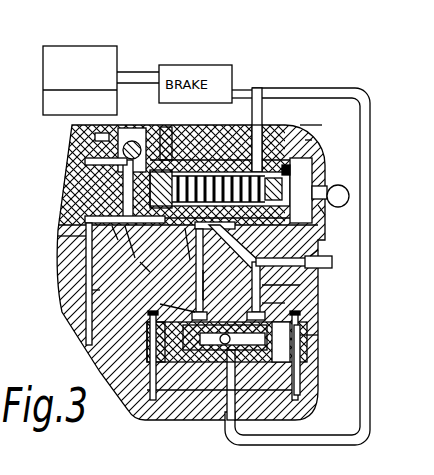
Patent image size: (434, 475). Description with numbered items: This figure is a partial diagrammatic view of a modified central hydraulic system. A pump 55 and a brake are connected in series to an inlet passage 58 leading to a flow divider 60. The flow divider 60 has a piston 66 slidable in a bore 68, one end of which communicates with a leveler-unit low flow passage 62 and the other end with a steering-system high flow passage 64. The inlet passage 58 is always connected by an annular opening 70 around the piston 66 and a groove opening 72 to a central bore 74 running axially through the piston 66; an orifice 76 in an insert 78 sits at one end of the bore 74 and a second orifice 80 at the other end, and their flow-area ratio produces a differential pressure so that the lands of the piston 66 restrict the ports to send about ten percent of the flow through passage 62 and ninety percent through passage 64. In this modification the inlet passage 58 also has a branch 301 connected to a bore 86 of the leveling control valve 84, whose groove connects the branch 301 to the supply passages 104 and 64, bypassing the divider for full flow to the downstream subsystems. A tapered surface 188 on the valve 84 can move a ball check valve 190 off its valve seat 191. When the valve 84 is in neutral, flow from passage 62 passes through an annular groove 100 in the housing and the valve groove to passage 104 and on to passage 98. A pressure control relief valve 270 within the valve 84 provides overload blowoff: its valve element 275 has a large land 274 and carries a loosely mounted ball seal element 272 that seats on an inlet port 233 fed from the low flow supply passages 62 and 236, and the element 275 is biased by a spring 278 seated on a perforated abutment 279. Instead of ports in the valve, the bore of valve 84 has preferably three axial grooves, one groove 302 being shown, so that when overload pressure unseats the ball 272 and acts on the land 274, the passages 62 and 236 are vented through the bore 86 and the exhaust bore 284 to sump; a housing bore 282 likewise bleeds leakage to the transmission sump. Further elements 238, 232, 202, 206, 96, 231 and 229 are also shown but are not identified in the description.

The pump 55 is at (64, 80).
The passage 238 is at (141, 154).
The ball check valve 190 is at (134, 139).
The passage 232 is at (173, 133).
The pressure control relief valve 270 is at (220, 157).
The inlet passage 58 is at (234, 238).
The axial groove 302 is at (258, 100).
The branch 301 is at (264, 112).
The leveling control valve 84 is at (327, 123).
The bore 86 is at (321, 156).
The relief valve element 275 is at (193, 170).
The plug 202 is at (292, 178).
The relief valve spring 278 is at (337, 183).
The passage 206 is at (68, 141).
The valve seat 191 is at (76, 166).
The inlet port 233 is at (121, 199).
The exhaust bore 284 is at (338, 220).
The passage 96 is at (330, 246).
The passage 98 is at (331, 259).
The housing bore 282 is at (46, 247).
The passage 231 is at (52, 284).
The tapered surface 188 is at (130, 240).
The large land 274 is at (211, 214).
The annular groove 100 is at (177, 249).
The transverse passage 236 is at (127, 252).
The ball seal element 272 is at (157, 275).
The passage 229 is at (111, 290).
The low flow passage 62 is at (175, 301).
The perforated abutment 279 is at (233, 246).
The passage 104 is at (287, 248).
The annular opening 70 is at (213, 271).
The orifice 76 is at (215, 284).
The groove opening 72 is at (248, 291).
The high flow passage 64 is at (287, 277).
The central bore 74 is at (282, 296).
The second orifice 80 is at (323, 335).
The bore 68 is at (322, 360).
The insert 78 is at (166, 363).
The flow divider 60 is at (227, 370).
The piston valve 66 is at (283, 366).